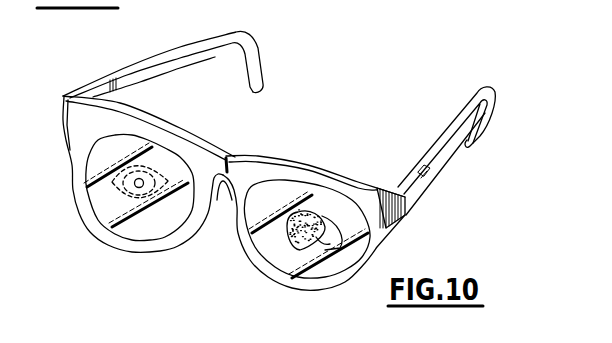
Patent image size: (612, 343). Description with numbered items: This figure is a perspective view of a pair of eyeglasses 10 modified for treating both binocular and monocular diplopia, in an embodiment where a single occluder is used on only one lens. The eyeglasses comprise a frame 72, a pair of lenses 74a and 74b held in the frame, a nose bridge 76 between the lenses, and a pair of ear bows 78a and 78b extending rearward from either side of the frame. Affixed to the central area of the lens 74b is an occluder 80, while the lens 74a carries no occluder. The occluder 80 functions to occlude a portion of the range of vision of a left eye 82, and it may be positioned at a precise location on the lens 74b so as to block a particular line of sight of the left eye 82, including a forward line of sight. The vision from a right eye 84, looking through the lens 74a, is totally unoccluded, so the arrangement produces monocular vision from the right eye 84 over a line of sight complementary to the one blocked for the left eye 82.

The eyeglasses 10 is at (357, 43).
The frame 72 is at (77, 122).
The lens 74a is at (108, 208).
The lens 74b is at (332, 273).
The nose bridge 76 is at (227, 160).
The ear bow 78a is at (249, 33).
The ear bow 78b is at (465, 104).
The occluder 80 is at (258, 257).
The left eye 82 is at (352, 205).
The right eye 84 is at (143, 170).